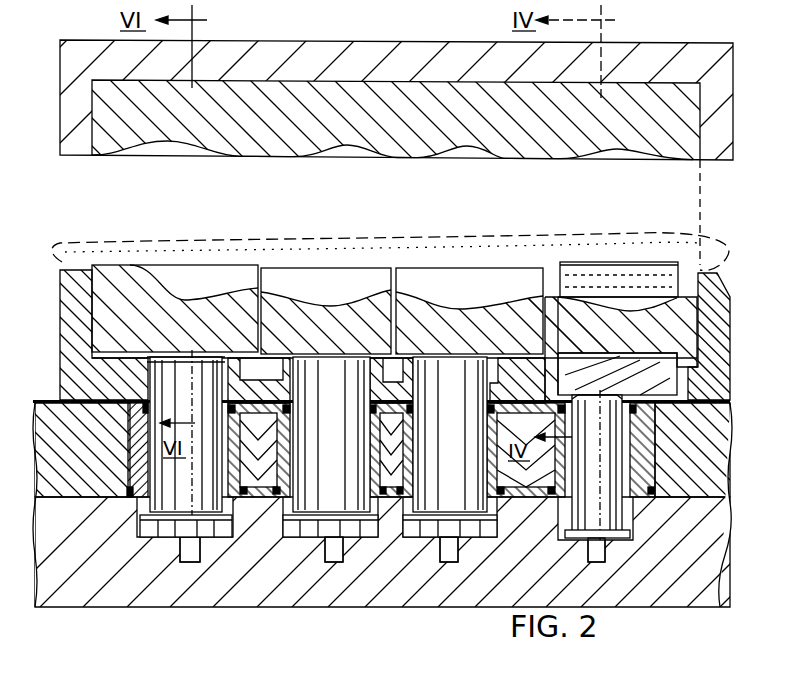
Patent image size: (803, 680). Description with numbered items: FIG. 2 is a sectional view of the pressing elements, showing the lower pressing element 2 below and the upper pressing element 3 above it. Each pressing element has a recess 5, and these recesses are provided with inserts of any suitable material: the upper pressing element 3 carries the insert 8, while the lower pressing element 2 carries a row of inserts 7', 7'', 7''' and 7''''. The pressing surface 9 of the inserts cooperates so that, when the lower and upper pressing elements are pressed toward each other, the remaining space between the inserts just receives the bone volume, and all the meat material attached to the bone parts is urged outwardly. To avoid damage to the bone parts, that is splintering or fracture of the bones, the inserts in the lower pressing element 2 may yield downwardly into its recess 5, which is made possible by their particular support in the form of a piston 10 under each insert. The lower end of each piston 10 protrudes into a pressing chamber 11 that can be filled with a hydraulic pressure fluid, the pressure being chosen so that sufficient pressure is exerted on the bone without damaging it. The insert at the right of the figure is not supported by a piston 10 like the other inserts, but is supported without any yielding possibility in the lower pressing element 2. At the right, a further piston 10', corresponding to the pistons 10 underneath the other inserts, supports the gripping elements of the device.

The lower pressing element 2 is at (715, 348).
The upper pressing element 3 is at (733, 90).
The recess 5 is at (692, 278).
The insert 7' is at (176, 278).
The insert 7'' is at (328, 281).
The insert 7''' is at (484, 304).
The insert 7'''' is at (643, 303).
The insert 8 is at (390, 140).
The pressing surface 9 is at (291, 158).
The piston 10 is at (129, 456).
The piston 10' is at (631, 513).
The pressing chamber 11 is at (140, 503).